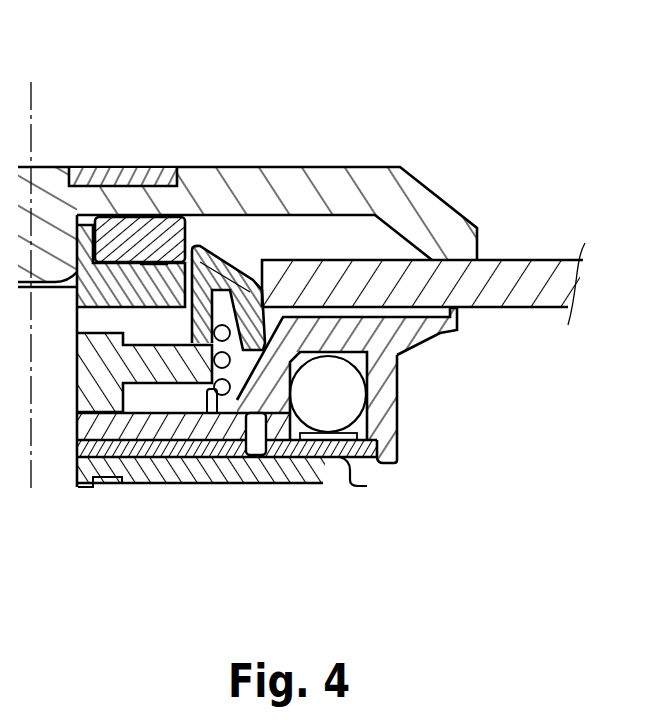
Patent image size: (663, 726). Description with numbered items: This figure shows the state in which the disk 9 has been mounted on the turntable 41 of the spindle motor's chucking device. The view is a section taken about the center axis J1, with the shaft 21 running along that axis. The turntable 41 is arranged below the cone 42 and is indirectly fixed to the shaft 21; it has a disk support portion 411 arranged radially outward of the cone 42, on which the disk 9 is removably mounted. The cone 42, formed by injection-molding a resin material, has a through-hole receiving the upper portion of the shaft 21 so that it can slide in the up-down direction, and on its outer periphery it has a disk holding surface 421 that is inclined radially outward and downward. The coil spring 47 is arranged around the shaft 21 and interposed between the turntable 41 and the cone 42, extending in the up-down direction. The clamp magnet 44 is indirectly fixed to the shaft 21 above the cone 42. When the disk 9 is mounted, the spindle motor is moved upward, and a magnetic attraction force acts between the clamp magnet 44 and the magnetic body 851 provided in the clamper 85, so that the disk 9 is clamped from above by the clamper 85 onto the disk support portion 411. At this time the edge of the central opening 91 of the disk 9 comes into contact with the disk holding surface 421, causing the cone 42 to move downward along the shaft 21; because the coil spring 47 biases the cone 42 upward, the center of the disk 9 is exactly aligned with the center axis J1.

The center axis J1 is at (37, 107).
The shaft 21 is at (48, 305).
The magnetic body 851 is at (127, 177).
The clamp magnet 44 is at (170, 230).
The central opening 91 is at (254, 238).
The clamper 85 is at (320, 192).
The turntable 41 is at (331, 310).
The disk 9 is at (510, 275).
The disk support portion 411 is at (398, 333).
The cone 42 is at (160, 365).
The coil spring 47 is at (233, 345).
The disk holding surface 421 is at (337, 360).